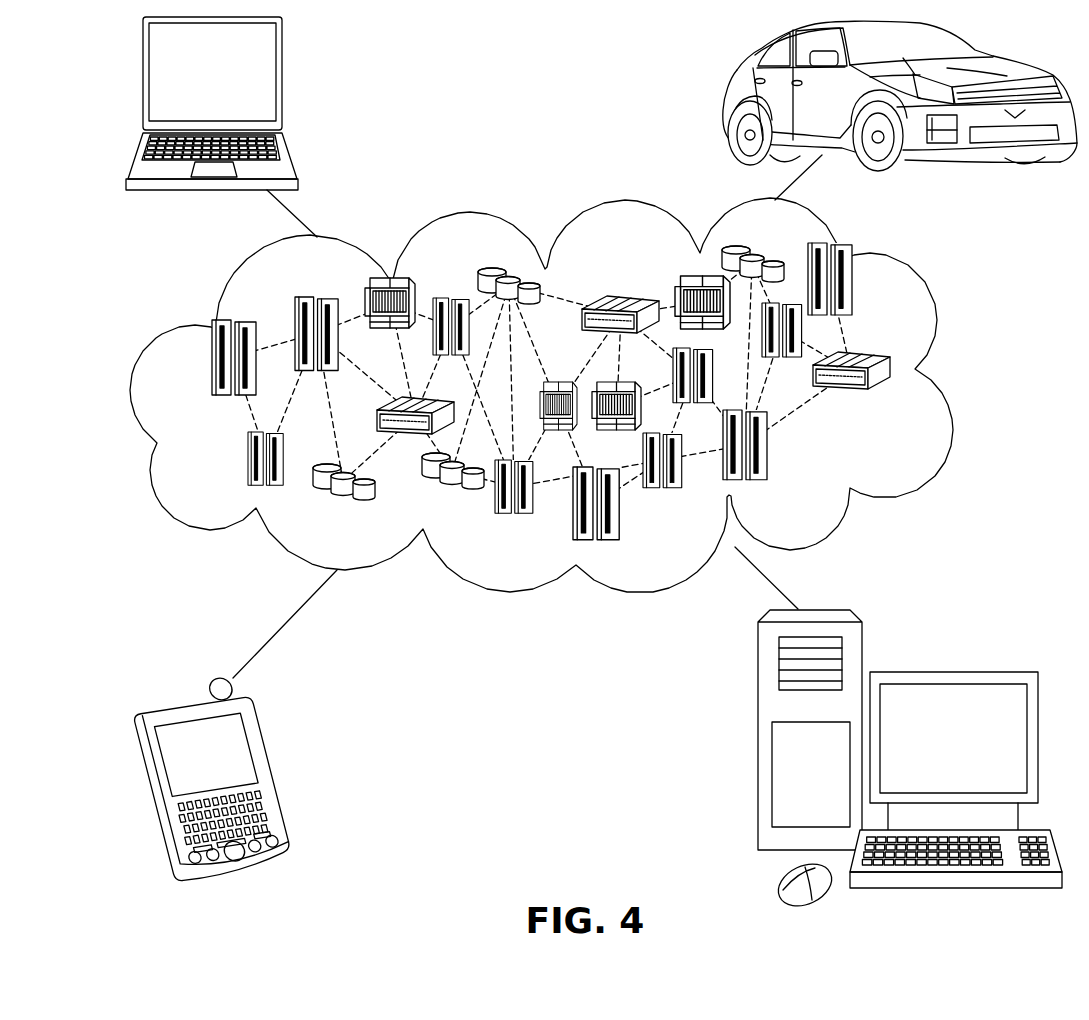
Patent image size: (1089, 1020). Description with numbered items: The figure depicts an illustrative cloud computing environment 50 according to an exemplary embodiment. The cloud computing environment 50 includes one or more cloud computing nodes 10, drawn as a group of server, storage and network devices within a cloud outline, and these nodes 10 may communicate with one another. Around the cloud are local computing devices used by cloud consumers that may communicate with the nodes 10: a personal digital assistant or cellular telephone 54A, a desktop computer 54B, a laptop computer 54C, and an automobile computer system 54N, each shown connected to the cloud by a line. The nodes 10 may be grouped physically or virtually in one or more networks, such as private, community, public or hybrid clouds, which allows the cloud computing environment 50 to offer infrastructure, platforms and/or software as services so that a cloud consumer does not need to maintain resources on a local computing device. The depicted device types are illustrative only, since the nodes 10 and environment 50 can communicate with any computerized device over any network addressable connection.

The cloud computing node 10 is at (895, 401).
The cloud computing environment 50 is at (903, 364).
The personal digital assistant or cellular telephone 54A is at (274, 771).
The desktop computer 54B is at (949, 673).
The laptop computer 54C is at (283, 82).
The automobile computer system 54N is at (728, 99).